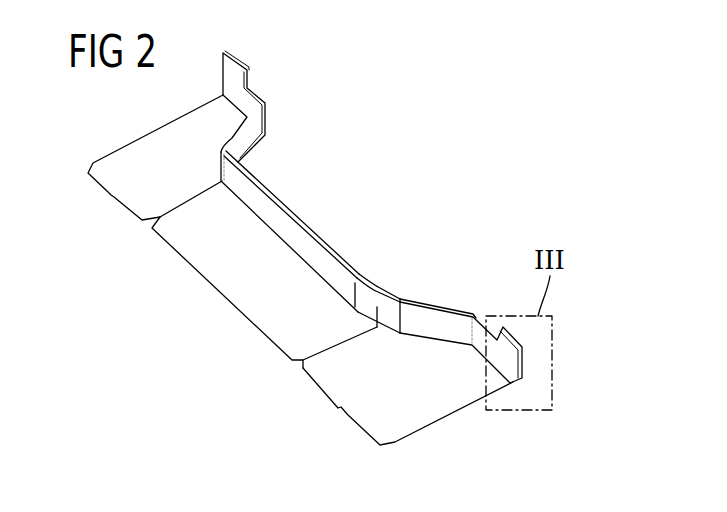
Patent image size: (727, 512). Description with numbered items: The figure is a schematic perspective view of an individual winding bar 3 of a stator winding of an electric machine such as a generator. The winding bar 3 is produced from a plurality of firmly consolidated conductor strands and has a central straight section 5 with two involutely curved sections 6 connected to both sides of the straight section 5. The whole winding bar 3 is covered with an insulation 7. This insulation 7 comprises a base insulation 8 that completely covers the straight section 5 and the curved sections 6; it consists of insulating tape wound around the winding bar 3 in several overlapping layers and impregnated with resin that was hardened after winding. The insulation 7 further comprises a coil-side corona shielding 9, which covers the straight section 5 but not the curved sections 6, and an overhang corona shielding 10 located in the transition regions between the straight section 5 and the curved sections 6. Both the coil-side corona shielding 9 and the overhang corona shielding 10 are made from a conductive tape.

The winding bar 3 is at (377, 200).
The straight section 5 is at (216, 288).
The involutely curved sections 6 is at (111, 195).
The insulation 7 is at (290, 204).
The base insulation 8 is at (443, 317).
The coil-side corona shielding 9 is at (292, 238).
The overhang corona shielding 10 is at (362, 317).